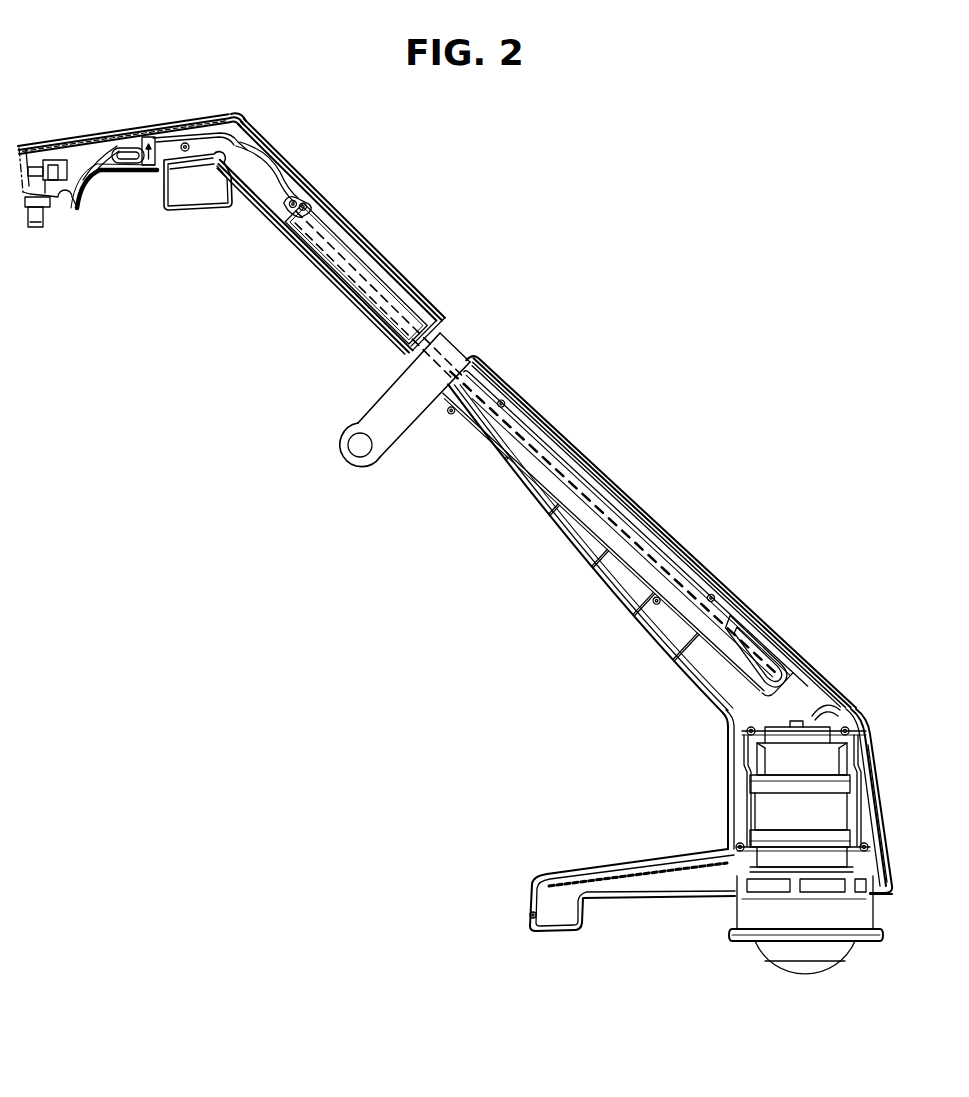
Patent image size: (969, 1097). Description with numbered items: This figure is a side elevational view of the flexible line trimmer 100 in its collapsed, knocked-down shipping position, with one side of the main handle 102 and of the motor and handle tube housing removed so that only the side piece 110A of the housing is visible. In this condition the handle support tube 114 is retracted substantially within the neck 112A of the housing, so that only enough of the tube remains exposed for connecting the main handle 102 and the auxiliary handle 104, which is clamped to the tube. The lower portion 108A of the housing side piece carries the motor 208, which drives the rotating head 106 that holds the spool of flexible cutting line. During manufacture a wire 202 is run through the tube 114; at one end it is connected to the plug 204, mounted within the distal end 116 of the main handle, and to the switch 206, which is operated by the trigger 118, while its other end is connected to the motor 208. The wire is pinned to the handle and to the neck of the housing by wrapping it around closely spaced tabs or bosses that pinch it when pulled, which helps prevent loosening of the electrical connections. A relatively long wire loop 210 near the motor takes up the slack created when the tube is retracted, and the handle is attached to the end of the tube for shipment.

The flexible line trimmer 100 is at (613, 362).
The main handle 102 is at (332, 207).
The auxiliary handle 104 is at (387, 433).
The rotating head 106 is at (887, 941).
The right housing wall 108A is at (866, 784).
The side piece of the housing 110A is at (646, 670).
The arm shell rail 112A is at (672, 538).
The handle support tube 114 is at (432, 308).
The distal end of main handle 116 is at (40, 133).
The trigger 118 is at (199, 184).
The wire 202 is at (250, 142).
The plug 204 is at (20, 205).
The switch 206 is at (151, 137).
The motor 208 is at (773, 815).
The wire loop 210 is at (772, 633).